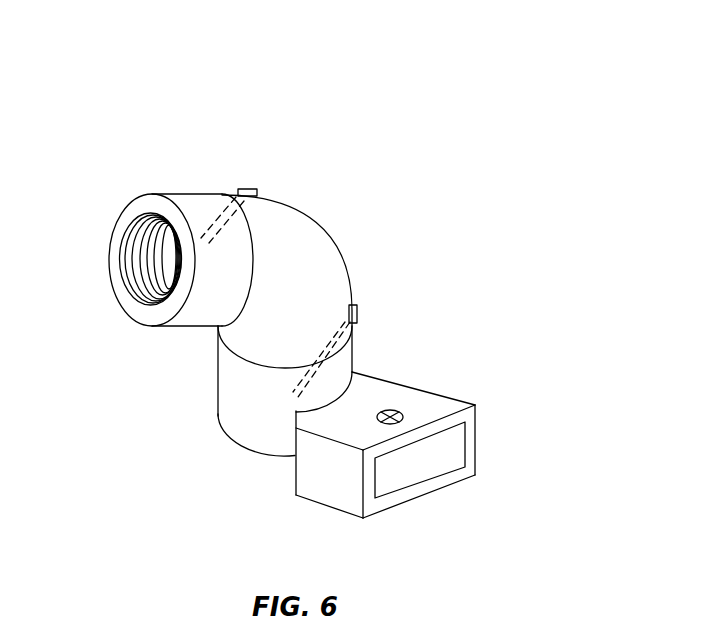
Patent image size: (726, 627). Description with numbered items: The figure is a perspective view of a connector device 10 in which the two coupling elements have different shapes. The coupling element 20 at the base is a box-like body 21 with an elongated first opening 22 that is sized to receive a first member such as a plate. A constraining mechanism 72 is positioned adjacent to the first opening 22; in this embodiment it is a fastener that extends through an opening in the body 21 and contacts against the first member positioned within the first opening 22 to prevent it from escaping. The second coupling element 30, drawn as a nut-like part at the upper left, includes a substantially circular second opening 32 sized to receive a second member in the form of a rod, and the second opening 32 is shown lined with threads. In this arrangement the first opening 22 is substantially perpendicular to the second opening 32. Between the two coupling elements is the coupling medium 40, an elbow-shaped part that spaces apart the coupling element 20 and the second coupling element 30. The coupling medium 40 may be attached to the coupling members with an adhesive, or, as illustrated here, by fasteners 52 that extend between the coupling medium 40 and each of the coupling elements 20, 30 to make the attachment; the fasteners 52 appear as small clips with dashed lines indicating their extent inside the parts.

The device 10 is at (373, 150).
The coupling element 20 is at (368, 390).
The body 21 is at (352, 433).
The first opening 22 is at (412, 468).
The second coupling element 30 is at (198, 210).
The second opening 32 is at (137, 277).
The coupling medium 40 is at (317, 250).
The fasteners 52 is at (257, 190).
The constraining mechanism 72 is at (395, 407).